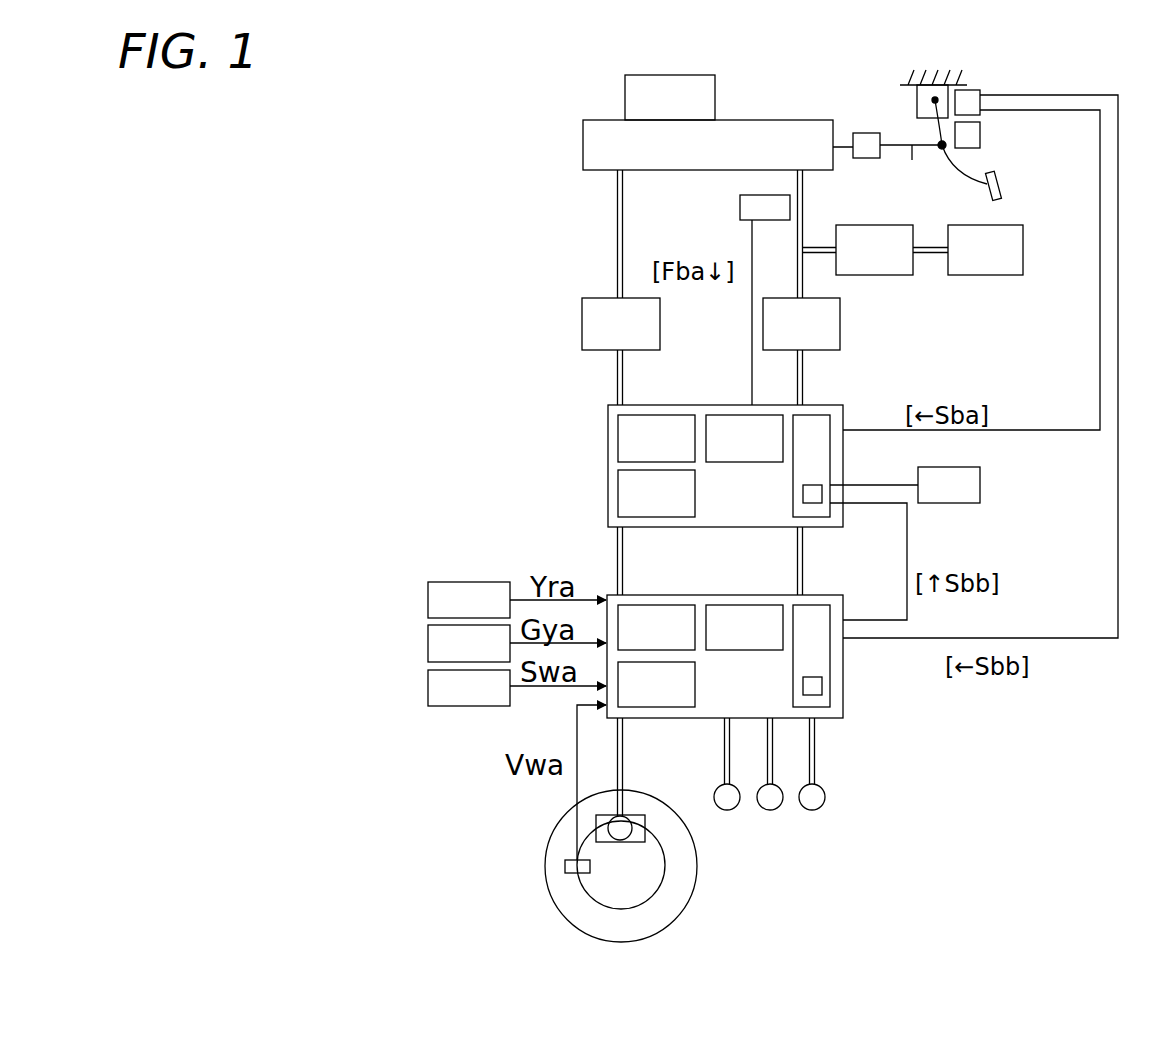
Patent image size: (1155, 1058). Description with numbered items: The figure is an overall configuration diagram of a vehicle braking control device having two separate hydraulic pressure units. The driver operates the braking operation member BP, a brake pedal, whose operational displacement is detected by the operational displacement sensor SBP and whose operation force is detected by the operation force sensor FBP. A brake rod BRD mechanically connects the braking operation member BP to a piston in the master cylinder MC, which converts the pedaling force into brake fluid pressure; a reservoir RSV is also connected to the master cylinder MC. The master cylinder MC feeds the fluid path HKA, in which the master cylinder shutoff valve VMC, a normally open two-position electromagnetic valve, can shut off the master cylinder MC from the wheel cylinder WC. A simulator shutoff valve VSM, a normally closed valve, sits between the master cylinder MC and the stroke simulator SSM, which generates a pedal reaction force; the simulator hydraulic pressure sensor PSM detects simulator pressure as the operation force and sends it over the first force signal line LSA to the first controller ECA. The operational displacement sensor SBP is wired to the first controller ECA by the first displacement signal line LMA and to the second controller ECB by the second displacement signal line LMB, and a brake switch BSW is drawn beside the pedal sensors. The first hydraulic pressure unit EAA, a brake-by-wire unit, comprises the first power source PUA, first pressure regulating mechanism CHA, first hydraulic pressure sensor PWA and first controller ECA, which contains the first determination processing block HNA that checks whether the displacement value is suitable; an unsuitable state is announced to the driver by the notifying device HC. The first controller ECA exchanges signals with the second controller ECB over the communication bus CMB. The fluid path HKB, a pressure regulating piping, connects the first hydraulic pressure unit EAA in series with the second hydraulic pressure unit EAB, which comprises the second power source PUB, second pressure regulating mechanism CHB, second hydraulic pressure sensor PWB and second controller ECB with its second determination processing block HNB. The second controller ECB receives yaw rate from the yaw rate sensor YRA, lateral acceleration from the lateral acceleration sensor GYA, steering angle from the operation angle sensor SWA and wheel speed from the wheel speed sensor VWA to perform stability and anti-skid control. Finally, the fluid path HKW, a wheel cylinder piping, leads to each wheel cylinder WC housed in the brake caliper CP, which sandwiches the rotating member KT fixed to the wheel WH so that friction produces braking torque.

The reservoir RSV is at (670, 97).
The master cylinder MC is at (708, 145).
The fluid path HKA is at (617, 377).
The simulator hydraulic pressure sensor PSM is at (721, 220).
The first force signal line LSA is at (752, 320).
The operation force sensor FBP is at (887, 128).
The brake rod BRD is at (910, 171).
The operational displacement sensor SBP is at (971, 121).
The braking operation member BP is at (1016, 188).
The brake switch BSW is at (980, 138).
The first displacement signal line LMA is at (1062, 430).
The second displacement signal line LMB is at (1060, 638).
The simulator shutoff valve VSM is at (858, 250).
The stroke simulator SSM is at (968, 250).
The master cylinder shutoff valve VMC is at (711, 324).
The first hydraulic pressure unit EAA is at (680, 393).
The first power source PUA is at (656, 438).
The first hydraulic pressure sensor PWA is at (744, 438).
The first pressure regulating mechanism CHA is at (656, 493).
The first controller ECA is at (830, 456).
The first determination processing block HNA is at (803, 497).
The notifying device HC is at (905, 485).
The communication bus CMB is at (907, 535).
The fluid path HKB is at (617, 553).
The second hydraulic pressure unit EAB is at (715, 583).
The second power source PUB is at (656, 627).
The second hydraulic pressure sensor PWB is at (744, 627).
The second pressure regulating mechanism CHB is at (656, 684).
The second controller ECB is at (830, 664).
The second determination processing block HNB is at (803, 687).
The yaw rate sensor YRA is at (517, 600).
The lateral acceleration sensor GYA is at (517, 643).
The operation angle sensor SWA is at (517, 688).
The wheel speed sensor VWA is at (565, 862).
The fluid path HKW is at (623, 757).
The wheel cylinder WC is at (825, 800).
The brake caliper CP is at (645, 825).
The wheel WH is at (556, 905).
The rotating member KT is at (621, 865).